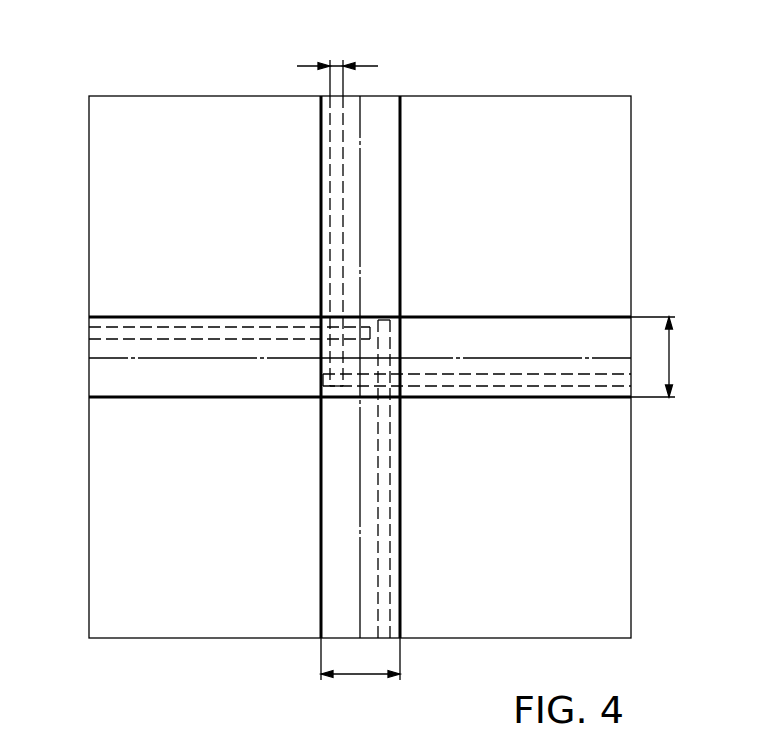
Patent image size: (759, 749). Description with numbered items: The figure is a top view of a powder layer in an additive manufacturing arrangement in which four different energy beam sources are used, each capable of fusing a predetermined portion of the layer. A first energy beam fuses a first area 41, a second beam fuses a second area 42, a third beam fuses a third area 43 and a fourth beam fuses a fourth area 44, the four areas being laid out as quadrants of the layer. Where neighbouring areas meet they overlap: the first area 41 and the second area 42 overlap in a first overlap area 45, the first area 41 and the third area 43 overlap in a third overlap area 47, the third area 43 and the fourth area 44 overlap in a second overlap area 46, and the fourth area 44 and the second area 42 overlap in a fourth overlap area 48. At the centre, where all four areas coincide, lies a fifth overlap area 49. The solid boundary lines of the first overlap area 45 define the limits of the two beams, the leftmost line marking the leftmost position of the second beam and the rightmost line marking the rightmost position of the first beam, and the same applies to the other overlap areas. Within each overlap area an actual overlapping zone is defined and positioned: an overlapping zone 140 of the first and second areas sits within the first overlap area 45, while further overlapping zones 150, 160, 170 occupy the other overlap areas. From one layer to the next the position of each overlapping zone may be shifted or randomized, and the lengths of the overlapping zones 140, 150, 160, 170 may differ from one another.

The first area 41 is at (205, 206).
The second area 42 is at (515, 206).
The third area 43 is at (205, 517).
The fourth area 44 is at (515, 517).
The first overlap area 45 is at (359, 223).
The second overlap area 46 is at (360, 479).
The third overlap area 47 is at (229, 357).
The fourth overlap area 48 is at (477, 357).
The fifth overlap area 49 is at (320, 370).
The overlapping zone 140 is at (340, 62).
The overlapping zone 150 is at (89, 333).
The overlapping zone 160 is at (385, 638).
The overlapping zone 170 is at (631, 380).